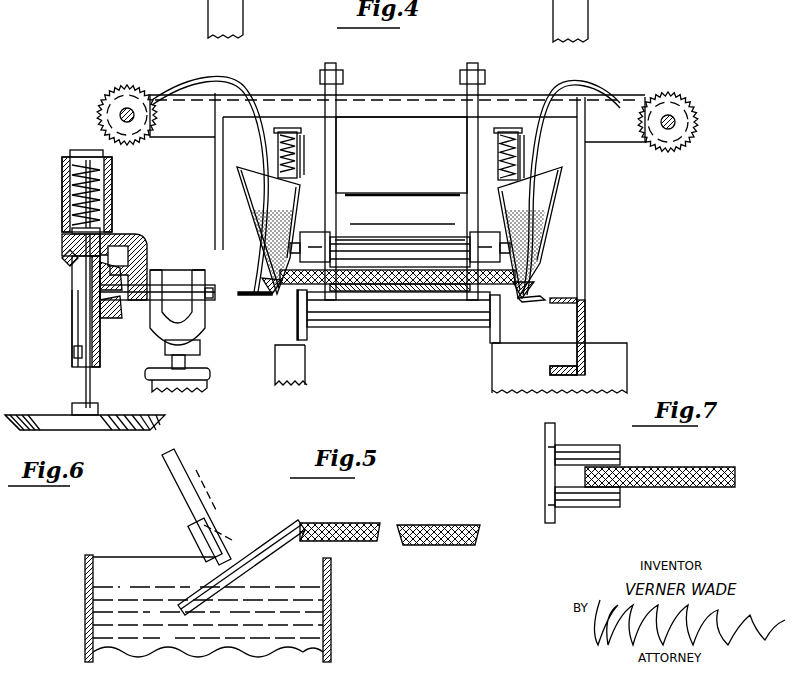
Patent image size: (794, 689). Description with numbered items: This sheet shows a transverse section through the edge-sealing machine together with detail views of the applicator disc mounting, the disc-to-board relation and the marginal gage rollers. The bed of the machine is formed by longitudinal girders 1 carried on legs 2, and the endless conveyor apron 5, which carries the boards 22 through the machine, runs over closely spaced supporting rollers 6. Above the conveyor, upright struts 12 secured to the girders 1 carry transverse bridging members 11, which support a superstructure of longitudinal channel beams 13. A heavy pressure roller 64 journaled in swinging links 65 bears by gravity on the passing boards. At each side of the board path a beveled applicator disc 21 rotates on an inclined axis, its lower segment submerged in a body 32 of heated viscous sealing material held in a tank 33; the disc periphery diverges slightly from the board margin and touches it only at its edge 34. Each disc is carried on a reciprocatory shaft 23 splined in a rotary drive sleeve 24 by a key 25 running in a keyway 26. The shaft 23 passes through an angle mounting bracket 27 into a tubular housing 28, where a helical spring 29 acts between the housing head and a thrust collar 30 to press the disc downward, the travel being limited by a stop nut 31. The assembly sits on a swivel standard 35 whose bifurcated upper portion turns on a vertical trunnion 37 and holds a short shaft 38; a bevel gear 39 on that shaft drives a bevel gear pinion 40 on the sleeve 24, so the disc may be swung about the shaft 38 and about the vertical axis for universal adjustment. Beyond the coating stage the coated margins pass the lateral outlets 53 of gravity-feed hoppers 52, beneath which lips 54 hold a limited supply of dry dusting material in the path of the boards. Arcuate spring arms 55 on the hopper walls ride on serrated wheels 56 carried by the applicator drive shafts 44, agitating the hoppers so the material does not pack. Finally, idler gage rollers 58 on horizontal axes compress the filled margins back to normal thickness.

In FIG. 4, the longitudinal girders 1 is at (572, 324).
In FIG. 4, the legs 2 is at (245, 10).
In FIG. 4, the endless conveyor apron 5 is at (426, 287).
In FIG. 4, the supporting rollers 6 is at (398, 292).
In FIG. 4, the transverse bridging members 11 is at (417, 100).
In FIG. 4, the upright struts 12 is at (584, 233).
In FIG. 4, the longitudinal channel beams 13 is at (278, 149).
In FIG. 6, the beveled applicator discs 21 is at (52, 414).
In FIG. 5, the beveled applicator discs 21 is at (270, 532).
In FIG. 4, the boards 22 is at (364, 285).
In FIG. 5, the boards 22 is at (327, 522).
In FIG. 7, the boards 22 is at (672, 488).
In FIG. 6, the reciprocatory shaft 23 is at (94, 386).
In FIG. 5, the reciprocatory shaft 23 is at (194, 492).
In FIG. 4, the rotary drive sleeve 24 is at (291, 292).
In FIG. 6, the rotary drive sleeve 24 is at (100, 338).
In FIG. 6, the key 25 is at (72, 356).
In FIG. 6, the keyway 26 is at (72, 316).
In FIG. 6, the angle mounting bracket 27 is at (130, 242).
In FIG. 6, the tubular housing 28 is at (112, 200).
In FIG. 6, the helical spring 29 is at (98, 176).
In FIG. 6, the thrust collar 30 is at (72, 231).
In FIG. 6, the stop nut 31 is at (80, 152).
In FIG. 5, the body of sealing material 32 is at (166, 620).
In FIG. 4, the tank 33 is at (297, 377).
In FIG. 5, the tank 33 is at (85, 602).
In FIG. 5, the edge of disc 34 is at (305, 540).
In FIG. 6, the swivel standard 35 is at (202, 380).
In FIG. 6, the vertical trunnion 37 is at (188, 362).
In FIG. 6, the shaft 38 is at (176, 282).
In FIG. 6, the bevel gear 39 is at (132, 274).
In FIG. 6, the bevel gear pinion 40 is at (62, 258).
In FIG. 4, the applicator drive shaft 44 is at (125, 110).
In FIG. 4, the hopper 52 is at (250, 210).
In FIG. 4, the lateral outlet 53 is at (285, 292).
In FIG. 4, the lip 54 is at (518, 298).
In FIG. 4, the arcuate spring arm 55 is at (229, 96).
In FIG. 4, the serrated wheel 56 is at (134, 84).
In FIG. 7, the gage rollers 58 is at (580, 452).
In FIG. 4, the pressure roller 64 is at (421, 194).
In FIG. 4, the swinging links 65 is at (325, 172).